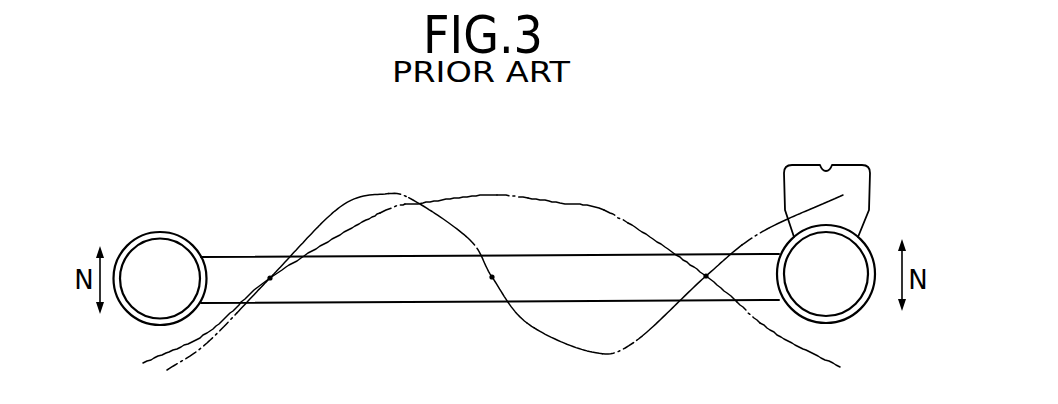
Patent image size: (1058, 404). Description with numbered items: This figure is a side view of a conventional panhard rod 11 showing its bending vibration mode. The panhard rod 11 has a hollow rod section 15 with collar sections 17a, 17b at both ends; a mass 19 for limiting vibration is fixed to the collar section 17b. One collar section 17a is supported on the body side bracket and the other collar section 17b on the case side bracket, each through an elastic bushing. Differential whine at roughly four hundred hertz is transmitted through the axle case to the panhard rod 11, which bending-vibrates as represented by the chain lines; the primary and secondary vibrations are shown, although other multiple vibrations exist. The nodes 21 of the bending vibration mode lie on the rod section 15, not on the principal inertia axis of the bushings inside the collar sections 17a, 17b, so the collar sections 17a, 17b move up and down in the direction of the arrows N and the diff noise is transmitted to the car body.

The panhard rod 11 is at (530, 238).
The hollow rod section 15 is at (612, 255).
The collar section 17a is at (166, 230).
The collar section 17b is at (868, 248).
The mass for limiting vibration 19 is at (843, 177).
The nodes 21 is at (270, 279).